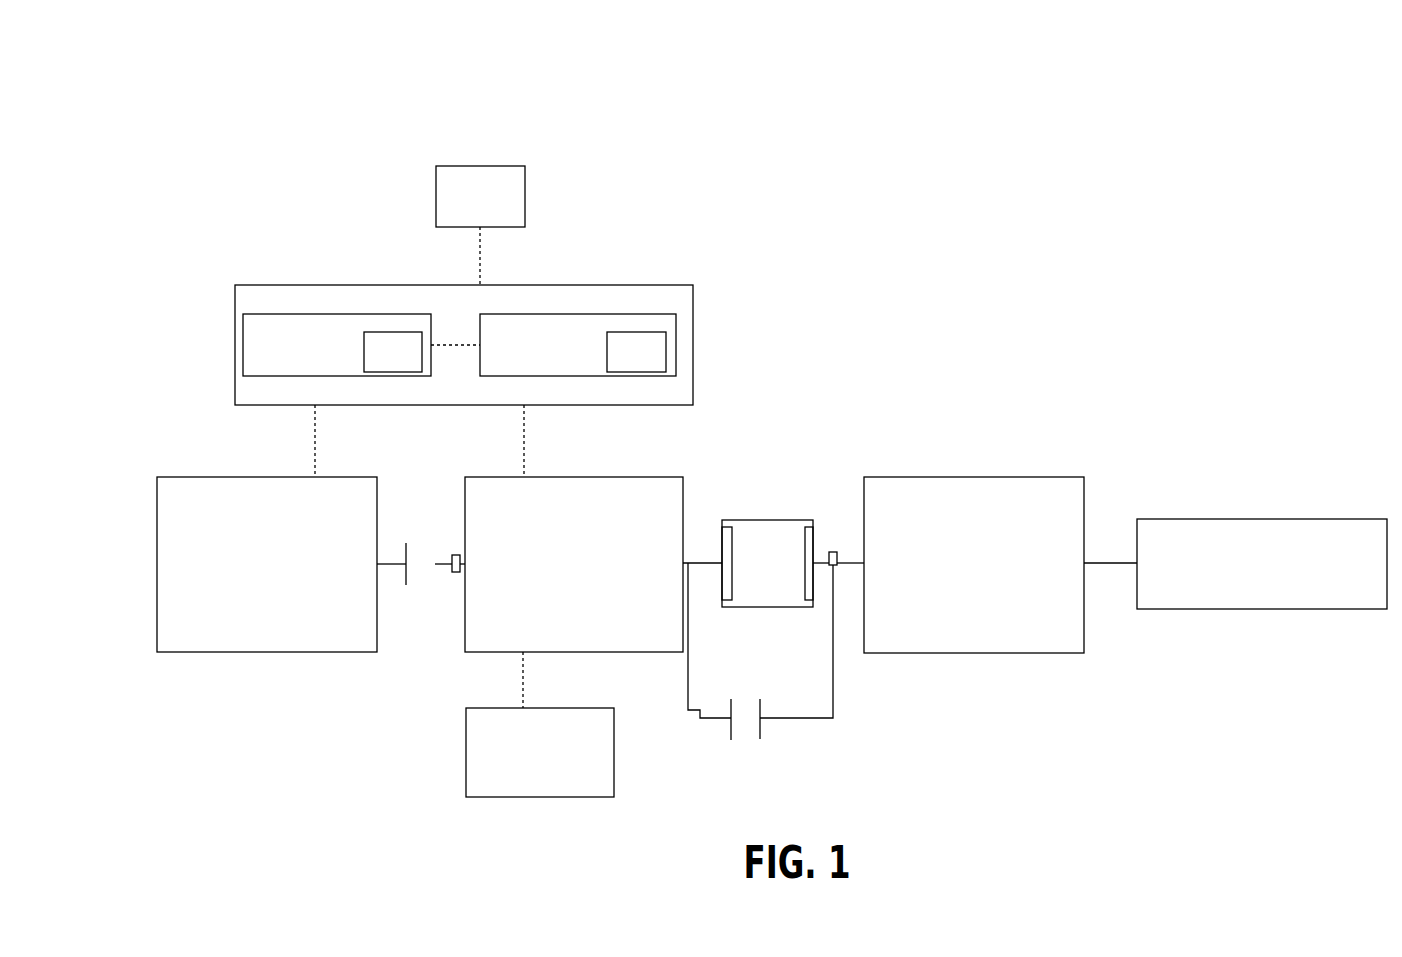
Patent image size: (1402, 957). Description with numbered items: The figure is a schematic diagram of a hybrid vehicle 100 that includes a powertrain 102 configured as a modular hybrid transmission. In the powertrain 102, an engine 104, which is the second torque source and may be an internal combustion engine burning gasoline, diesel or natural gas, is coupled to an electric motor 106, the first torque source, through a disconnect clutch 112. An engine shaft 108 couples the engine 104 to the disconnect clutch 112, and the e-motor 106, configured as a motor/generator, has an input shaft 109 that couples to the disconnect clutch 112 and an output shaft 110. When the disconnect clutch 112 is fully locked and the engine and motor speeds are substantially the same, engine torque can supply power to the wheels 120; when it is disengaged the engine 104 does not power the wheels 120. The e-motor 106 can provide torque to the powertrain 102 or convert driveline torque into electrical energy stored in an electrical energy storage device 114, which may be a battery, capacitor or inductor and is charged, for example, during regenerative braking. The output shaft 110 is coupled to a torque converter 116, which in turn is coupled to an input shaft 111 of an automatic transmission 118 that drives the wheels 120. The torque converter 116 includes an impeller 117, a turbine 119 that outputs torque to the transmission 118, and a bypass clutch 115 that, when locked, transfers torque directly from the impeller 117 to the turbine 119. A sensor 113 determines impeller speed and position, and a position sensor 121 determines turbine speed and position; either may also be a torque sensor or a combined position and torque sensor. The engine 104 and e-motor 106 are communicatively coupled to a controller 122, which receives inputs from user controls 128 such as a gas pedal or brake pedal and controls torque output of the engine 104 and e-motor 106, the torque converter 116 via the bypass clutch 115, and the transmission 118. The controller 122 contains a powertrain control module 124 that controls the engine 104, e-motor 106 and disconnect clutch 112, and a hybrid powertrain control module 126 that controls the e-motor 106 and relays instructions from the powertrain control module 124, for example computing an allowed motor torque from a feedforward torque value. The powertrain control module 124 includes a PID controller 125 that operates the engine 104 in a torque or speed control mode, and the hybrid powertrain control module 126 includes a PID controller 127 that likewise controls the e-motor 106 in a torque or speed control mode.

The hybrid vehicle 100 is at (120, 91).
The powertrain 102 is at (140, 385).
The engine 104 is at (157, 575).
The electric motor 106 is at (638, 476).
The engine shaft 108 is at (388, 566).
The input shaft 109 is at (438, 566).
The output shaft 110 is at (710, 567).
The input shaft 111 is at (857, 563).
The disconnect clutch 112 is at (437, 549).
The sensor 113 is at (453, 553).
The electrical energy storage device 114 is at (466, 783).
The bypass clutch 115 is at (730, 739).
The torque converter 116 is at (768, 518).
The impeller 117 is at (727, 520).
The automatic transmission 118 is at (965, 476).
The turbine 119 is at (813, 520).
The wheels 120 is at (1175, 518).
The position sensor 121 is at (832, 550).
The controller 122 is at (235, 297).
The powertrain control module 124 is at (337, 345).
The PID controller 125 is at (393, 352).
The hybrid powertrain control module 126 is at (578, 345).
The PID controller 127 is at (636, 352).
The user controls 128 is at (436, 205).